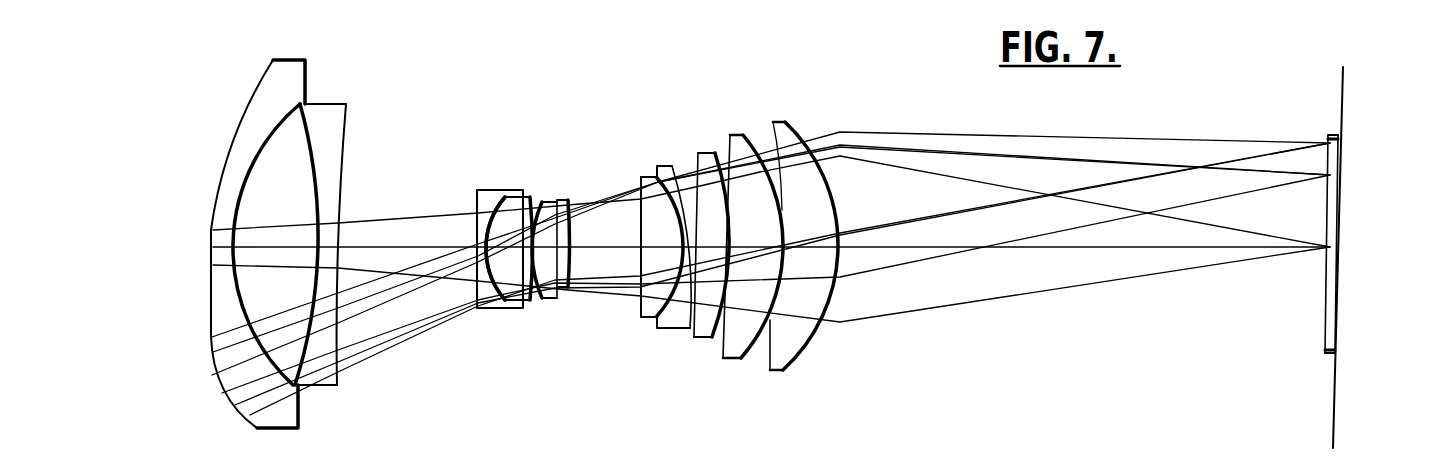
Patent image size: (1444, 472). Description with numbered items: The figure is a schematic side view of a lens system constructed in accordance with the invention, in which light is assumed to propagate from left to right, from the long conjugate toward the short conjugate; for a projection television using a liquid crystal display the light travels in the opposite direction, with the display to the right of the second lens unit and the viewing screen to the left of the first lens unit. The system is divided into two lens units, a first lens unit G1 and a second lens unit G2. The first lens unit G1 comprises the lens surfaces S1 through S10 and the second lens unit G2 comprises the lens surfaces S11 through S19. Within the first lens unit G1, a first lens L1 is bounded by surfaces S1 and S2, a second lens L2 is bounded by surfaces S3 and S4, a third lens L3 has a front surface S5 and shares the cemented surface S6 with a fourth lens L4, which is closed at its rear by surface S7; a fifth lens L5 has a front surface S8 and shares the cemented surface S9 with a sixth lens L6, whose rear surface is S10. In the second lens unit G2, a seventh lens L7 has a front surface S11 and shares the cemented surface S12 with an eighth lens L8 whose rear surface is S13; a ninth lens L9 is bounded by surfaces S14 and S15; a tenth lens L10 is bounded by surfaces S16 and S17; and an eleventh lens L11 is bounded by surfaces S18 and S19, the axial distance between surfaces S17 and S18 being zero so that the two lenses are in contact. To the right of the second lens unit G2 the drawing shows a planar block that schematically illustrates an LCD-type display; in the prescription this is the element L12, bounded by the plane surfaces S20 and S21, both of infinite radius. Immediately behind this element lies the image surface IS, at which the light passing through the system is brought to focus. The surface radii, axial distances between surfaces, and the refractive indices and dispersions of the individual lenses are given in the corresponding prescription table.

The first lens unit G1 is at (585, 54).
The second lens unit G2 is at (795, 54).
The first lens L1 is at (211, 244).
The second lens L2 is at (353, 243).
The third lens L3 is at (460, 214).
The fourth lens L4 is at (483, 241).
The fifth lens L5 is at (557, 239).
The sixth lens L6 is at (566, 204).
The seventh lens L7 is at (619, 248).
The eighth lens L8 is at (662, 253).
The ninth lens L9 is at (741, 260).
The tenth lens L10 is at (808, 248).
The eleventh lens L11 is at (850, 224).
The planar block L12 is at (1327, 267).
The lens surface S1 is at (213, 326).
The lens surface S2 is at (246, 352).
The lens surface S3 is at (299, 374).
The lens surface S4 is at (340, 345).
The lens surface S5 is at (476, 198).
The lens surface S6 is at (499, 196).
The lens surface S7 is at (486, 301).
The lens surface S8 is at (508, 303).
The lens surface S9 is at (541, 299).
The lens surface S10 is at (569, 293).
The lens surface S11 is at (640, 291).
The lens surface S12 is at (657, 316).
The lens surface S13 is at (668, 320).
The lens surface S14 is at (690, 332).
The lens surface S15 is at (708, 340).
The lens surface S16 is at (745, 350).
The lens surface S17 is at (752, 355).
The lens surface S18 is at (806, 329).
The lens surface S19 is at (832, 300).
The lens surface S20 is at (1325, 301).
The lens surface S21 is at (1340, 305).
The image surface IS is at (1340, 388).